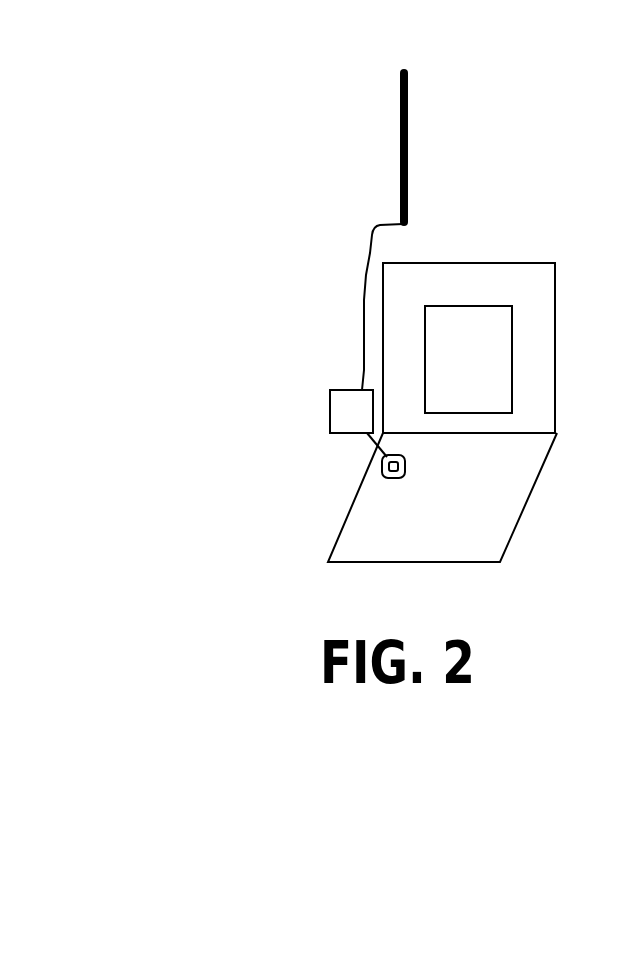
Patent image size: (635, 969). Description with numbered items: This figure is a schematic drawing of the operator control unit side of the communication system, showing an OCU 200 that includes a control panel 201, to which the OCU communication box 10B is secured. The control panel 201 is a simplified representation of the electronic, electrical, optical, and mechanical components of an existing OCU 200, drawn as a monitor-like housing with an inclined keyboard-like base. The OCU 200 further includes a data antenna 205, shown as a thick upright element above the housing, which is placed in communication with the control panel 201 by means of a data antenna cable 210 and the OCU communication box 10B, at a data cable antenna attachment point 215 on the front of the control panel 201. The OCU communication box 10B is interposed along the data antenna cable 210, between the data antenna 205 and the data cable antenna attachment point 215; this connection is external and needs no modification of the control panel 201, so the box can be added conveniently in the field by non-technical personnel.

The operator control unit (OCU) 200 is at (503, 57).
The data antenna 205 is at (400, 137).
The data antenna cable 210 is at (366, 313).
The OCU communication box 10B is at (330, 413).
The data cable antenna attachment point 215 is at (382, 467).
The control panel 201 is at (533, 503).